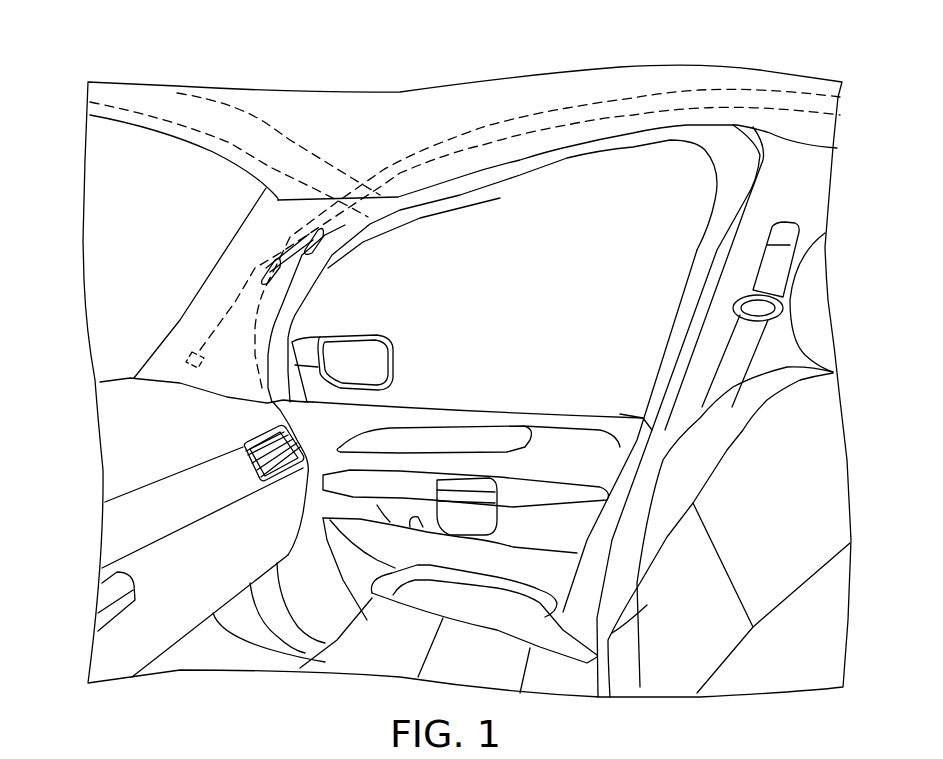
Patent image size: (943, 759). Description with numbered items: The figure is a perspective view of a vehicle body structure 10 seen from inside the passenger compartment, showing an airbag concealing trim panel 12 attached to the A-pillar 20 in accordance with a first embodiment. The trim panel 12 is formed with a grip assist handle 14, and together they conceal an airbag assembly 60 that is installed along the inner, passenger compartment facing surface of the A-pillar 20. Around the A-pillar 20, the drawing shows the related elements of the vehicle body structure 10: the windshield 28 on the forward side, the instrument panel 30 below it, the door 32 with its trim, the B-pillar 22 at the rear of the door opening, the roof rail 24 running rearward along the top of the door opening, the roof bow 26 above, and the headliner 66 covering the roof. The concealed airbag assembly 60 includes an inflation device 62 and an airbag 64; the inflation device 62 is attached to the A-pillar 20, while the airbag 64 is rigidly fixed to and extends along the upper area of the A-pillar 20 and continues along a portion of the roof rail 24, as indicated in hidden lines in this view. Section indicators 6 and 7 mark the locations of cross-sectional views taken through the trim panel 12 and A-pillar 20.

The vehicle body structure 10 is at (779, 68).
The airbag concealing trim panel 12 is at (380, 227).
The grip assist handle 14 is at (328, 257).
The A-pillar 20 is at (203, 294).
The B-pillar 22 is at (743, 262).
The roof rail 24 is at (630, 132).
The roof bow 26 is at (274, 128).
The windshield 28 is at (120, 217).
The instrument panel 30 is at (262, 535).
The door 32 is at (558, 420).
The airbag assembly 60 is at (383, 153).
The inflation device 62 is at (214, 340).
The airbag 64 is at (481, 152).
The headliner 66 is at (493, 103).
The section line 6- 6 is at (233, 237).
The section line 7- 7 is at (247, 213).